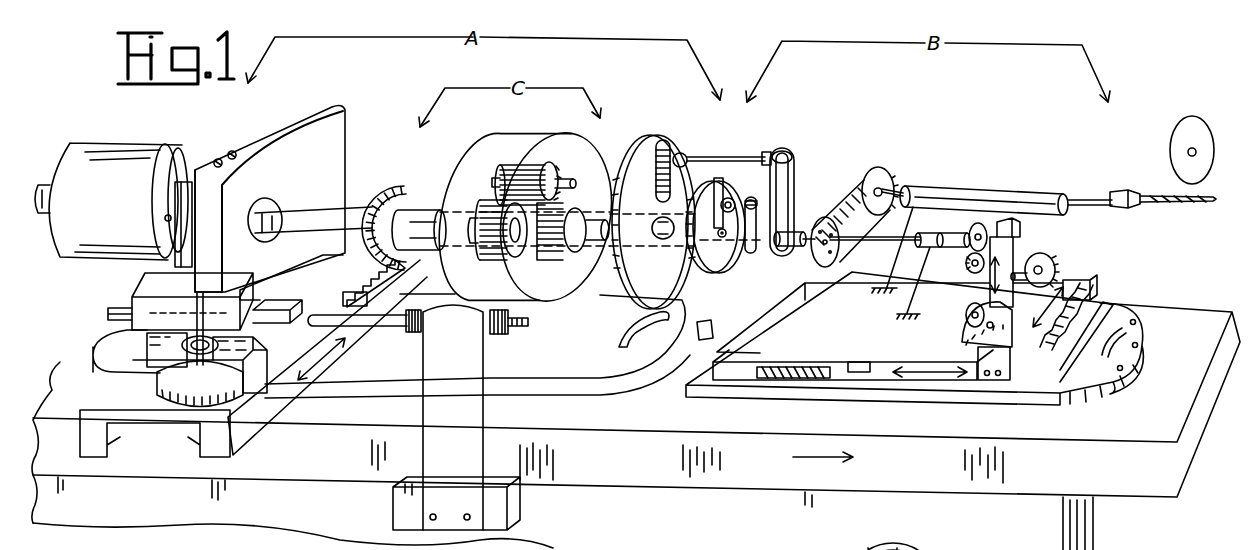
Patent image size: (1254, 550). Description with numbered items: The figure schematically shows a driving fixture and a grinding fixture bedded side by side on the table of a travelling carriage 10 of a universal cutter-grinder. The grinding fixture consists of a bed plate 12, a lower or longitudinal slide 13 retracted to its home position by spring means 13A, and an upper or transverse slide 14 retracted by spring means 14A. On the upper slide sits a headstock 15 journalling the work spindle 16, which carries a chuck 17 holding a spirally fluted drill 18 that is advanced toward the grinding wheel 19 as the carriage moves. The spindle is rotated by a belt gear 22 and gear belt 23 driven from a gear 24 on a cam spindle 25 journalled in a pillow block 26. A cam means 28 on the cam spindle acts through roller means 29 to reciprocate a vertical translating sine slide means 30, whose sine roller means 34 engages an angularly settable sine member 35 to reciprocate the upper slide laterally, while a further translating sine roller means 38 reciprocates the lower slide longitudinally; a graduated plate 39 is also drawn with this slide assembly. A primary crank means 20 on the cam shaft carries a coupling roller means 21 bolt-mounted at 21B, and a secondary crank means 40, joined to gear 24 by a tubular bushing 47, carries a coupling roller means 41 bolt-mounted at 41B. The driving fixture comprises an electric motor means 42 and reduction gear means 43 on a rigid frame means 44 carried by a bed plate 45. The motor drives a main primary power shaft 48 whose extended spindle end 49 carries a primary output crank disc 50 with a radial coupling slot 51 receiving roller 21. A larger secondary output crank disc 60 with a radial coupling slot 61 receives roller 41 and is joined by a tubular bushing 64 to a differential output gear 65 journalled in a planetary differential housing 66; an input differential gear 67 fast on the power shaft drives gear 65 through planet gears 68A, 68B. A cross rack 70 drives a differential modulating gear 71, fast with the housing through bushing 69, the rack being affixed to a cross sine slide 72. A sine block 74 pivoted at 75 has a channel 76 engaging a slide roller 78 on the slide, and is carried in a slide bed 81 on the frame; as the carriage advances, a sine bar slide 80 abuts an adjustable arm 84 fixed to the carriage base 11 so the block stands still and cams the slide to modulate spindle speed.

The travelling carriage 10 is at (1193, 324).
The carriage base 11 is at (1019, 542).
The bed plate 12 is at (708, 393).
The lower or longitudinal slide 13 is at (760, 353).
The spring means 13A is at (782, 388).
The upper or transverse slide 14 is at (803, 321).
The spring means 14A is at (1086, 305).
The headstock 15 is at (991, 181).
The work spindle 16 is at (1093, 197).
The chuck 17 is at (1123, 192).
The spirally fluted drill 18 is at (1167, 192).
The grinding wheel 19 is at (1163, 146).
The primary crank means 20 is at (748, 247).
The coupling roller means 21 is at (720, 200).
The bolt mounting 21B is at (752, 197).
The belt gear 22 is at (887, 177).
The gear belt 23 is at (848, 199).
The belt gear 24 is at (836, 256).
The cam spindle 25 is at (890, 236).
The pillow block 26 is at (927, 235).
The cam means 28 is at (970, 227).
The roller means 29 is at (965, 264).
The vertical translating sine slide means 30 is at (1025, 230).
The sine roller means 34 is at (1028, 253).
The sine member 35 is at (1047, 270).
The translating sine roller means 38 is at (970, 310).
The graduated plate 39 is at (968, 335).
The secondary crank means 40 is at (784, 182).
The coupling roller means 41 is at (681, 160).
The bolt mounting 41B is at (782, 157).
The electric motor means 42 is at (130, 206).
The reduction gear means 43 is at (183, 204).
The rigid frame means 44 is at (256, 204).
The bed plate 45 is at (586, 342).
The tubular shaft or bushing 47 is at (793, 237).
The main primary power shaft 48 is at (325, 216).
The primary output shaft means 49 is at (527, 252).
The primary output crank disc 50 is at (712, 178).
The radial coupling slot 51 is at (748, 196).
The secondary output crank disc 60 is at (635, 157).
The radial coupling slot 61 is at (660, 150).
The tubular bushing 64 is at (580, 244).
The differential output gear 65 is at (561, 254).
The planetary differential housing 66 is at (512, 134).
The input differential gear 67 is at (492, 256).
The planet gear 68A is at (513, 172).
The planet gear 68B is at (577, 184).
The bushing 69 is at (434, 207).
The cross rack 70 is at (360, 294).
The differential modulating gear 71 is at (399, 198).
The cross sine slide 72 is at (140, 410).
The sine block 74 is at (258, 366).
The pivot 75 is at (208, 231).
The channel 76 is at (155, 352).
The slide roller 78 is at (186, 332).
The sine bar slide 80 is at (282, 301).
The slide bed 81 is at (152, 293).
The adjustable arm 84 is at (393, 322).